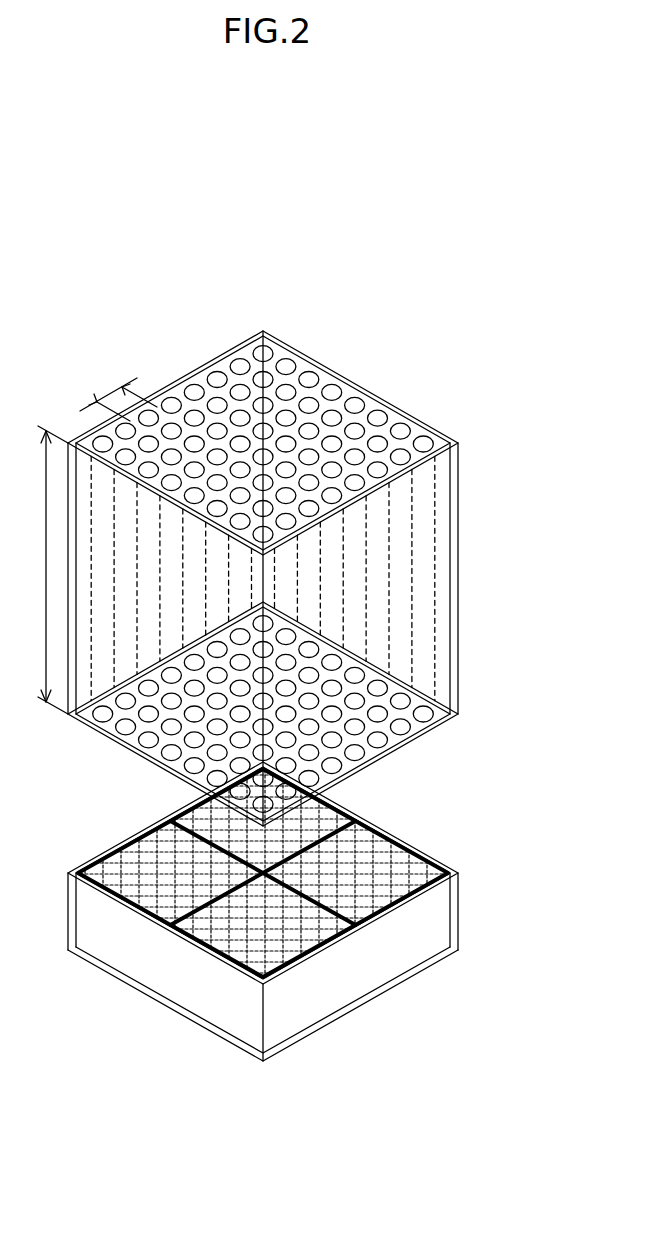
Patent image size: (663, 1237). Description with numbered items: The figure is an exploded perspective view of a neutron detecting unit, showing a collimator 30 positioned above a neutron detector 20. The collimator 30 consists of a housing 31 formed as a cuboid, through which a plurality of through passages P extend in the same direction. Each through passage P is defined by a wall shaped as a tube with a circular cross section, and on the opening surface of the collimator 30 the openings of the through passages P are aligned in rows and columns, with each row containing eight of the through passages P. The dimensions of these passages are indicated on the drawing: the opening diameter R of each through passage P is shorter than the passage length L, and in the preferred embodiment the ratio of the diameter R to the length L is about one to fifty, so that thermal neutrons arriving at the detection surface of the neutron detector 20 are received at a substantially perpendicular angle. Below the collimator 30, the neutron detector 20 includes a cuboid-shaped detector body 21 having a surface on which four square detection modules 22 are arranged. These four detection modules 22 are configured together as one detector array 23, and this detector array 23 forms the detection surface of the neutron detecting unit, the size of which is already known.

The collimator 30 is at (271, 538).
The housing 31 is at (461, 568).
The through passage P is at (354, 405).
The opening diameter R is at (118, 393).
The passage length L is at (47, 570).
The neutron detector 20 is at (287, 945).
The detector body 21 is at (169, 973).
The detection module 22 is at (217, 822).
The detector array 23 is at (445, 860).